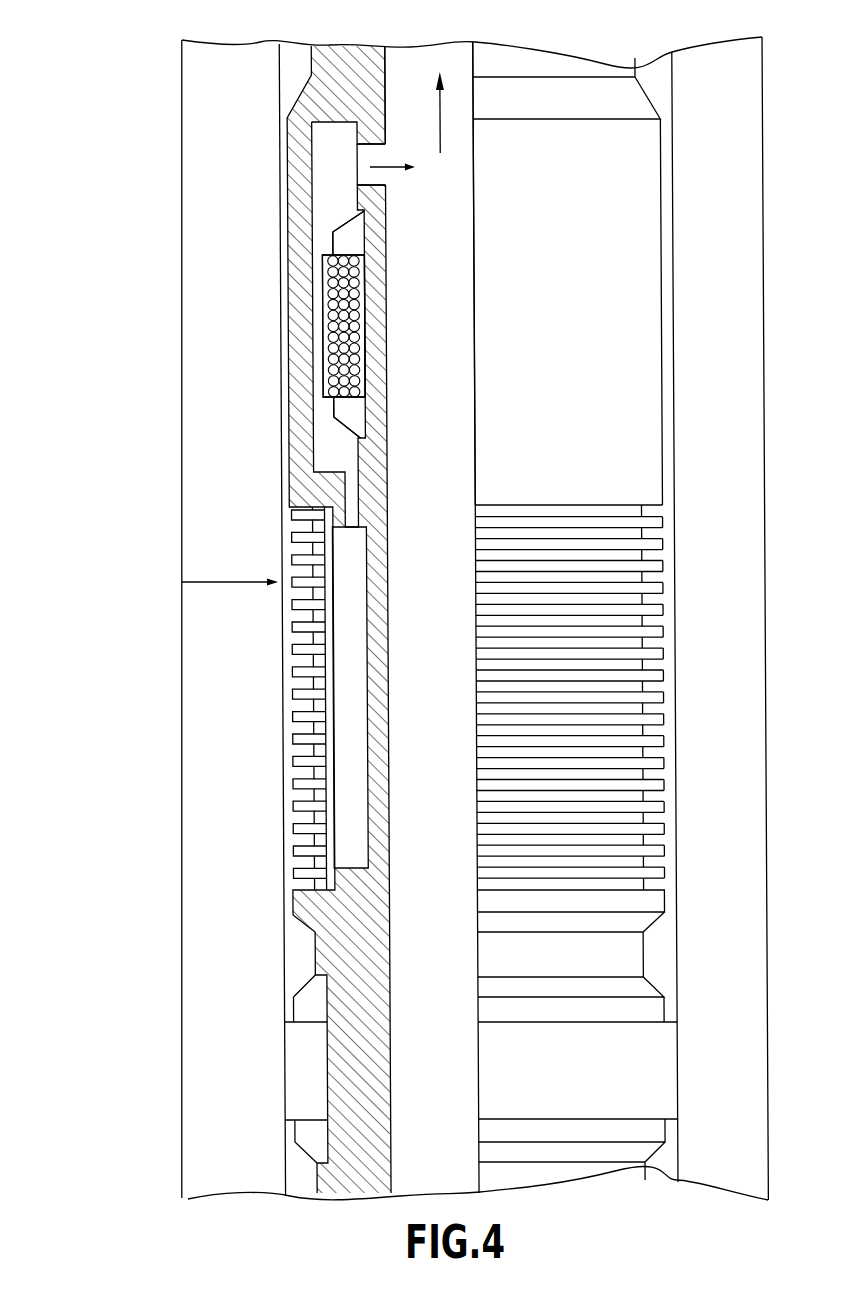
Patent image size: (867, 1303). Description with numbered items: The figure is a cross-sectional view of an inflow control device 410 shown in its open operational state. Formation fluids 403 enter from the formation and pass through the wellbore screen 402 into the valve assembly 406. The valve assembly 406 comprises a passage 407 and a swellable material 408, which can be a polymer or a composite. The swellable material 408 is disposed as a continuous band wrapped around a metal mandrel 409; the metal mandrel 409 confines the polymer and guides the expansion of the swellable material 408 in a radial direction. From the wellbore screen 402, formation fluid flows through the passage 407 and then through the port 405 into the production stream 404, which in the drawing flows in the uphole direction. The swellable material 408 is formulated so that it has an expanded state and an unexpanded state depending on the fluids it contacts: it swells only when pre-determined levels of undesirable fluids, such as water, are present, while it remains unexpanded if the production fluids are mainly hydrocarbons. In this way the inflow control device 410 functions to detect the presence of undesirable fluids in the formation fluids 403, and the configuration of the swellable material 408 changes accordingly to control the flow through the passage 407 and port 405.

The wellbore screen 402 is at (290, 870).
The formation fluids 403 is at (212, 582).
The production stream 404 is at (410, 57).
The port 405 is at (372, 180).
The valve assembly 406 is at (122, 240).
The passage 407 is at (317, 280).
The swellable material 408 is at (325, 385).
The metal mandrel 409 is at (350, 417).
The inflow control device 410 is at (124, 744).